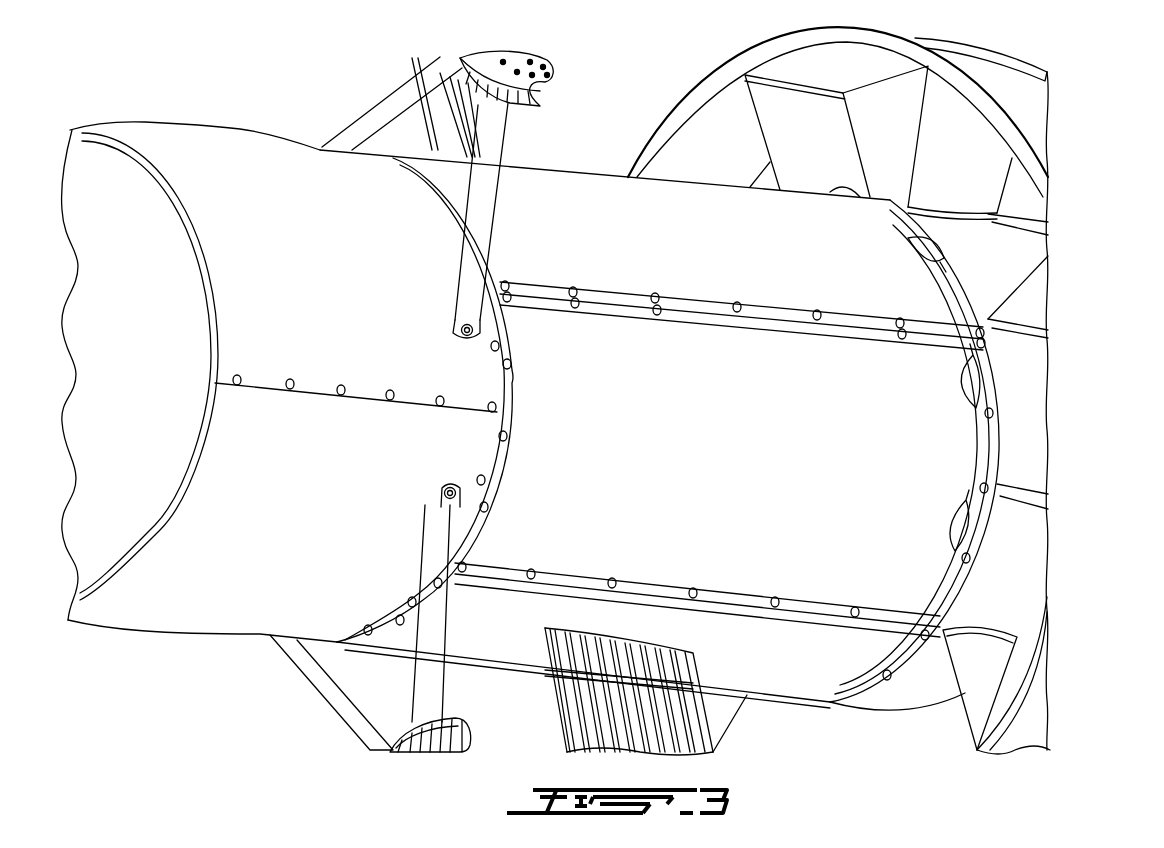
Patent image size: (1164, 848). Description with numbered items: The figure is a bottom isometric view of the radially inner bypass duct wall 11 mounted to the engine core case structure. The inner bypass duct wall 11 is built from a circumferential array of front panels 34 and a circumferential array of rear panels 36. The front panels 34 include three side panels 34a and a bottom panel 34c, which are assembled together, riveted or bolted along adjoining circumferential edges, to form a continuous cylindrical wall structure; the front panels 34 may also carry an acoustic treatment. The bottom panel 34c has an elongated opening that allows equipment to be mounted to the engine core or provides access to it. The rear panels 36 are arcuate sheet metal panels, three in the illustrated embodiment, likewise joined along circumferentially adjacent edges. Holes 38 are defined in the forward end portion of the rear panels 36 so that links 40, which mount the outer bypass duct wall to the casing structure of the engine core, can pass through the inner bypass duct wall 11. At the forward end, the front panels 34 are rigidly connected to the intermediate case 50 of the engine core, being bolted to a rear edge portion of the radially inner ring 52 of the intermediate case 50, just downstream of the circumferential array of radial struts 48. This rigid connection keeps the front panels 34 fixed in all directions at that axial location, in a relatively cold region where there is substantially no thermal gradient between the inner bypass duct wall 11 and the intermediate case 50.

The inner bypass duct wall 11 is at (603, 145).
The front panels 34 is at (568, 168).
The side panels 34a is at (760, 472).
The bottom panel 34c is at (482, 623).
The rear panels 36 is at (233, 168).
The holes 38 is at (453, 283).
The links 40 is at (482, 192).
The radial struts 48 is at (933, 120).
The intermediate case 50 is at (1016, 248).
The radially inner ring 52 is at (1023, 428).